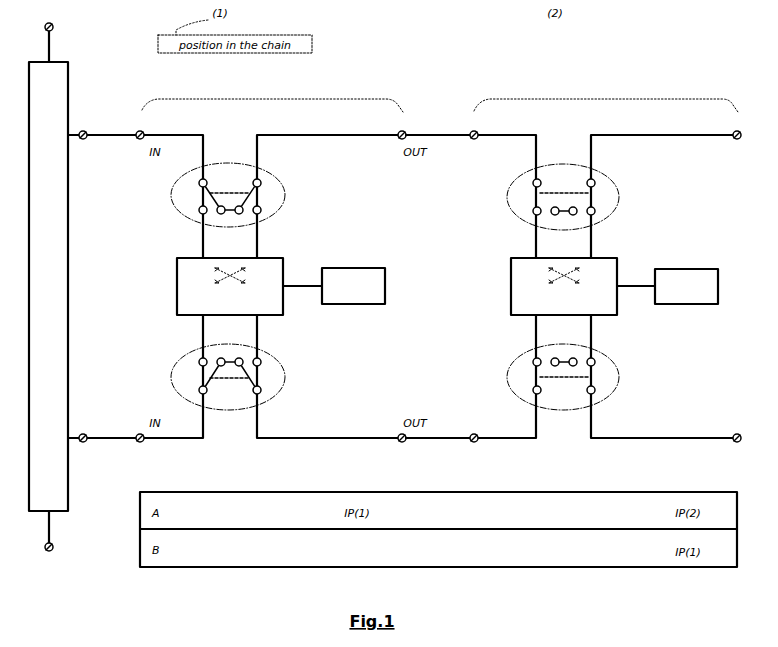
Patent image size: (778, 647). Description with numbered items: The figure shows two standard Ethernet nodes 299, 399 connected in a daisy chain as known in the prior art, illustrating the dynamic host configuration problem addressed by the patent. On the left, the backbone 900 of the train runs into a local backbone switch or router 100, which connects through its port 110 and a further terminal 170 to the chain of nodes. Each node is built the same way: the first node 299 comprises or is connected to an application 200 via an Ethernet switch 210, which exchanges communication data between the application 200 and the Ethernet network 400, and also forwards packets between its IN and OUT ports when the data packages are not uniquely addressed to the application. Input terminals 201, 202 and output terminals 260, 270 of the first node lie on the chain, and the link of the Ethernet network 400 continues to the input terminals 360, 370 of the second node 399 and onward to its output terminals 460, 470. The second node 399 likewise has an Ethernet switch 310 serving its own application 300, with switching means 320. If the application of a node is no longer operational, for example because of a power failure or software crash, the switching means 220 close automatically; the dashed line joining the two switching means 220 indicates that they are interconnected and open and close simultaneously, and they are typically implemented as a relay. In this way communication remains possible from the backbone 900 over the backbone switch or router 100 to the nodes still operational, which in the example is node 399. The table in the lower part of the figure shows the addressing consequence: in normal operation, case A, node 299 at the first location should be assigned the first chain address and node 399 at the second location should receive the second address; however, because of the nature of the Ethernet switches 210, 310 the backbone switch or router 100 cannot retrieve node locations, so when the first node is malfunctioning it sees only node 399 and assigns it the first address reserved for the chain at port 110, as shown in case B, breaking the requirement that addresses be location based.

The local backbone switch or router 100 is at (69, 493).
The port 110 is at (86, 138).
The lower connection terminal 170 is at (86, 441).
The application 200 is at (352, 305).
The first input terminal 201 is at (146, 130).
The second input terminal 202 is at (143, 441).
The Ethernet switch 210 is at (177, 293).
The switching means 220 is at (282, 203).
The first output terminal 260 is at (398, 137).
The second output terminal 270 is at (398, 440).
The Ethernet node 299 is at (282, 99).
The application of second module 300 is at (686, 304).
The Ethernet switch 310 is at (511, 293).
The switch arrangement of second module 320 is at (616, 203).
The first input terminal of second module 360 is at (478, 138).
The second input terminal of second module 370 is at (478, 441).
The Ethernet node 399 is at (618, 99).
The Ethernet network 400 is at (432, 137).
The first output terminal of second module 460 is at (733, 137).
The second output terminal of second module 470 is at (733, 440).
The backbone 900 is at (46, 545).